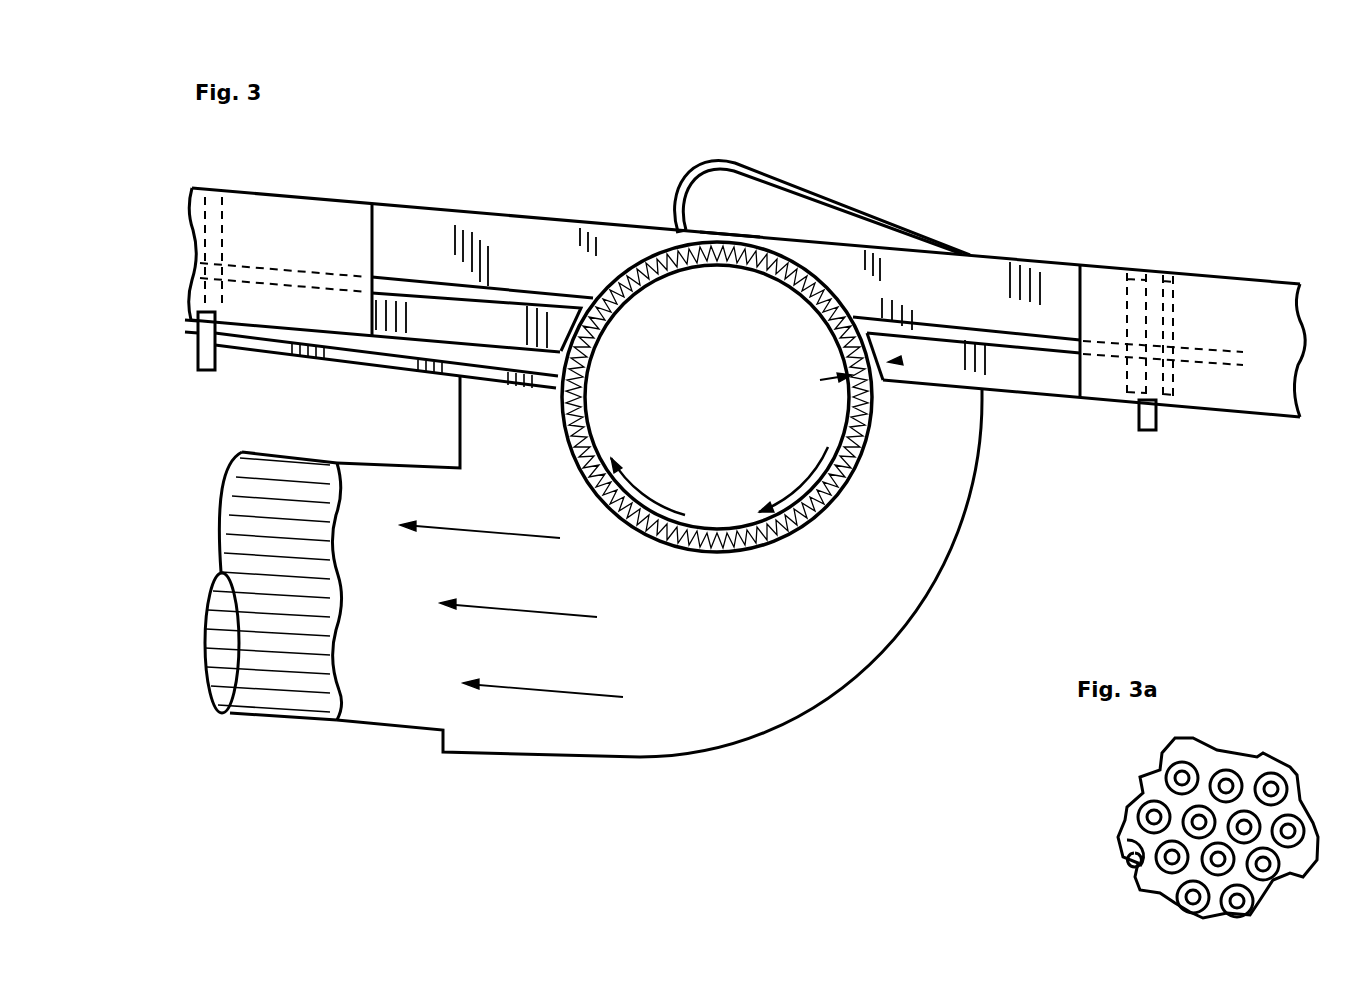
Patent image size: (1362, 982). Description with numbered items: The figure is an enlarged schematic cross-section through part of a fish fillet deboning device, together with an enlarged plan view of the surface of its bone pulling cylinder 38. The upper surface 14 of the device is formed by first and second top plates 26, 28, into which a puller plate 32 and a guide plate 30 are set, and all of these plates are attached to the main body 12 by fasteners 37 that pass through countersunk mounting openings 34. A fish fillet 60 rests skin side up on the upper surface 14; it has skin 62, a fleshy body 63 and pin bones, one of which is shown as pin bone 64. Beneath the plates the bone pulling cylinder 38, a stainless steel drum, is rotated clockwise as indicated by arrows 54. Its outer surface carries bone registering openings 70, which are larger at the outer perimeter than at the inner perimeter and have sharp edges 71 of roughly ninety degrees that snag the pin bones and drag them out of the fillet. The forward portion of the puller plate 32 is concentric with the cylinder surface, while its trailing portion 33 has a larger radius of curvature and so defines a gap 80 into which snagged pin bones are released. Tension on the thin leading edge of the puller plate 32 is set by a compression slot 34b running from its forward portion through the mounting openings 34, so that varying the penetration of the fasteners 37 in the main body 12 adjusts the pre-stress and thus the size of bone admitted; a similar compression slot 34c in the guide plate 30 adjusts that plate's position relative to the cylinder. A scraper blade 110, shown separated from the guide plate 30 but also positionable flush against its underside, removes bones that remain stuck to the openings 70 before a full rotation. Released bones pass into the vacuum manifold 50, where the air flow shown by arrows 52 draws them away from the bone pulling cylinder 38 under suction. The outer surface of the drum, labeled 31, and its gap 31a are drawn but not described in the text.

In FIG. 3, the main body 12 is at (296, 413).
In FIG. 3, the upper surface 14 is at (455, 208).
In FIG. 3, the first top plate 26 is at (1238, 283).
In FIG. 3, the second top plate 28 is at (283, 195).
In FIG. 3, the guide plate 30 is at (560, 220).
In FIG. 3, the rotor drum outer surface 31 is at (720, 273).
In FIG. 3, the gap 31a is at (728, 268).
In FIG. 3, the puller plate 32 is at (1068, 264).
In FIG. 3, the trailing portion 33 is at (848, 300).
In FIG. 3, the countersunk mounting openings 34 is at (1140, 271).
In FIG. 3, the compression slot 34b is at (980, 329).
In FIG. 3, the compression slot 34c is at (453, 295).
In FIG. 3, the fasteners 37 is at (200, 361).
In FIG. 3, the bone pulling cylinder 38 is at (582, 374).
In FIG. 3, the vacuum manifold 50 is at (745, 741).
In FIG. 3, the arrows indicating air flow 52 is at (465, 682).
In FIG. 3, the arrows indicating rotation direction 54 is at (790, 495).
In FIG. 3, the fish fillet 60 is at (905, 201).
In FIG. 3, the skin 62 is at (935, 239).
In FIG. 3, the fleshy body 63 is at (828, 207).
In FIG. 3, the pin bone 64 is at (723, 236).
In FIG. 3, the bone registering openings 70 is at (580, 266).
In FIG. 3A, the bone registering openings 70 is at (1272, 773).
In FIG. 3, the sharp edges 71 is at (732, 577).
In FIG. 3, the gap 80 is at (892, 361).
In FIG. 3, the scraper blade 110 is at (507, 384).